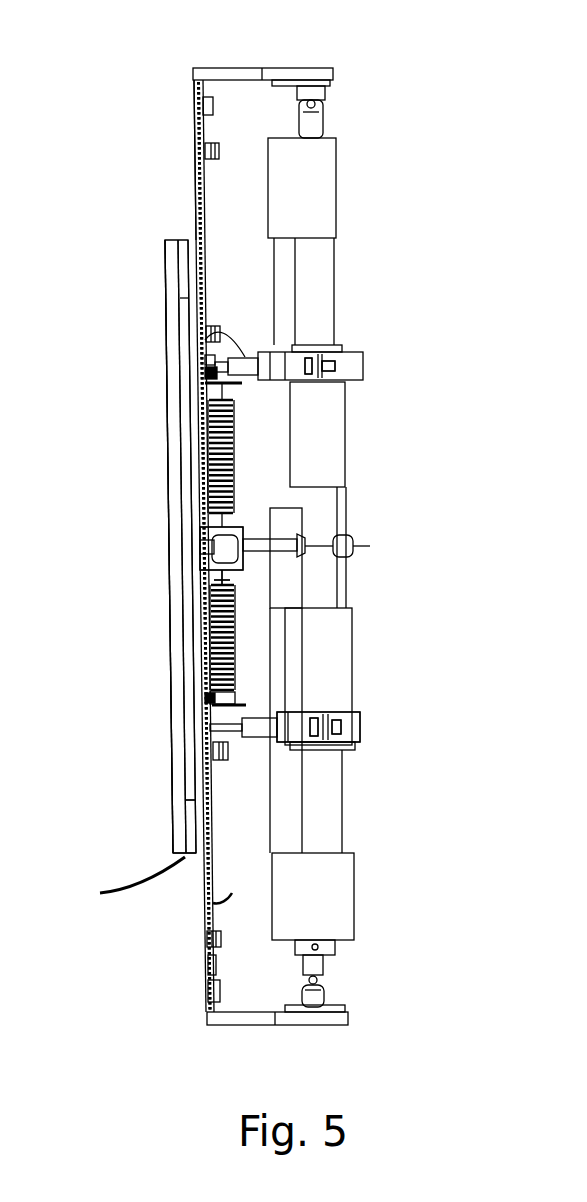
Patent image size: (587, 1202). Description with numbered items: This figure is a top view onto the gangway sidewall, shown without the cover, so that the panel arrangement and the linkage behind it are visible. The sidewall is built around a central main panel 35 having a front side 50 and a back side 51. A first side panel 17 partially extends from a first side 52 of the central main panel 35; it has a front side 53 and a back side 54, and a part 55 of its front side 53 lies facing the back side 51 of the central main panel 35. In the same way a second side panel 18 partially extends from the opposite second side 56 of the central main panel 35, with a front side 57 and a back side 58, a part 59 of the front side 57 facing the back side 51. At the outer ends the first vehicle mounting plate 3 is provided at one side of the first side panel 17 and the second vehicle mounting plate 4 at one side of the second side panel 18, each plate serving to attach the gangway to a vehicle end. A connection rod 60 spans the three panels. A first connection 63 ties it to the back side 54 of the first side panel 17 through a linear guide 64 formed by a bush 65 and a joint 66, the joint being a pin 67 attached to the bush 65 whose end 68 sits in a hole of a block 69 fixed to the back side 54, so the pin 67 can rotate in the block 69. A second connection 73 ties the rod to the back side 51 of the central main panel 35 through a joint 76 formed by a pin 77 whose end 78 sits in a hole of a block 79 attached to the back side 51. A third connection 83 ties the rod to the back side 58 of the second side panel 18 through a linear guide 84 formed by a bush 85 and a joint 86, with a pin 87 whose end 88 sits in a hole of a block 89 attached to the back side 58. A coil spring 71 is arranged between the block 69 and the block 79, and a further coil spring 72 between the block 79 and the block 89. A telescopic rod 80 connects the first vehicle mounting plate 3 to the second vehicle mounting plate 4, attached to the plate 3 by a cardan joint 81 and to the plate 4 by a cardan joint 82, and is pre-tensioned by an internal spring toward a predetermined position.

The first vehicle mounting plate 3 is at (233, 70).
The second vehicle mounting plate 4 is at (240, 1022).
The first side panel 17 is at (195, 164).
The second side panel 18 is at (205, 963).
The central main panel 35 is at (172, 511).
The front side of the central main panel 50 is at (170, 416).
The back side of the central main panel 51 is at (282, 418).
The first side of the central main panel 52 is at (178, 238).
The front side of the first side panel 53 is at (195, 199).
The back side of the first side panel 54 is at (203, 193).
The part of the front side of the first side panel 55 is at (188, 313).
The second side of the central main panel 56 is at (169, 888).
The front side of the second side panel 57 is at (206, 912).
The back side of the second side panel 58 is at (215, 850).
The part of the front side of the second side panel 59 is at (190, 838).
The connection rod 60 is at (343, 320).
The first connection 63 is at (253, 352).
The linear guide 64 is at (364, 360).
The bush 65 is at (364, 360).
The joint 66 is at (277, 347).
The pin 67 is at (207, 333).
The end of the pin 68 is at (198, 368).
The block 69 is at (198, 355).
The coil spring 71 is at (207, 455).
The further coil spring 72 is at (212, 663).
The second connection 73 is at (265, 563).
The joint 76 is at (265, 563).
The pin 77 is at (252, 528).
The end of the pin 78 is at (218, 566).
The block 79 is at (202, 542).
The telescopic rod 80 is at (340, 900).
The cardan joint 81 is at (320, 103).
The cardan joint 82 is at (328, 973).
The third connection 83 is at (258, 710).
The linear guide 84 is at (352, 723).
The bush 85 is at (352, 723).
The joint 86 is at (258, 710).
The pin 87 is at (252, 745).
The end of the pin 88 is at (220, 745).
The block 89 is at (212, 720).